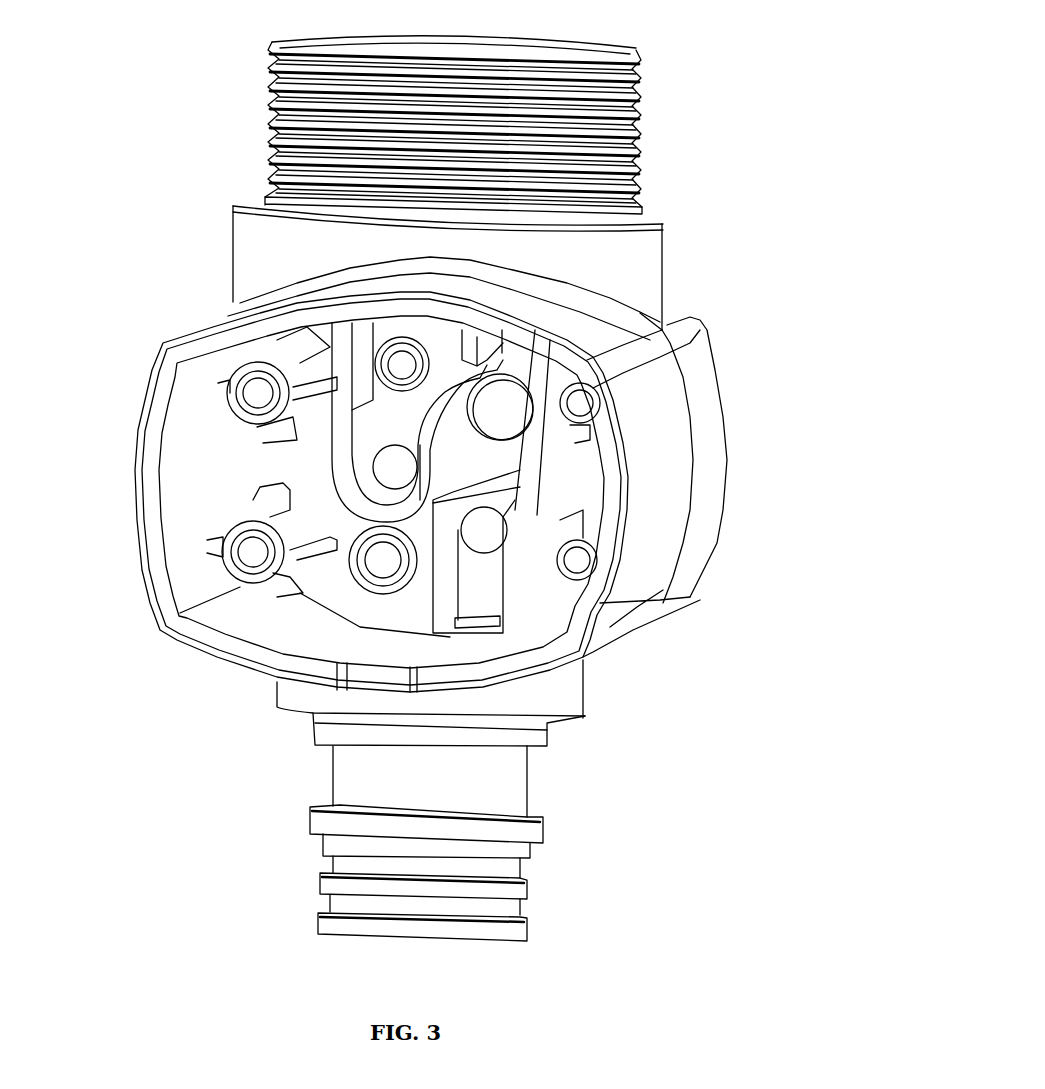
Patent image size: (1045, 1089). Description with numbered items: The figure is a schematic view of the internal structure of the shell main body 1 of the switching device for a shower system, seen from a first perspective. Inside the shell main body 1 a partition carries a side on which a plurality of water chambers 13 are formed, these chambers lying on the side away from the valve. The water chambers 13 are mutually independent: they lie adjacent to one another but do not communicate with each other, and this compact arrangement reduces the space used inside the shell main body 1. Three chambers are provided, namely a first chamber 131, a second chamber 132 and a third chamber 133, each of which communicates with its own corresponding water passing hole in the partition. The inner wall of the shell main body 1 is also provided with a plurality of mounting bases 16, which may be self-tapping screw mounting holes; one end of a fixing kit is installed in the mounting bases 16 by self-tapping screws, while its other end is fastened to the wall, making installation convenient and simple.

The shell main body 1 is at (214, 720).
The water chambers 13 is at (639, 435).
The first chamber 131 is at (407, 412).
The second chamber 132 is at (500, 453).
The third chamber 133 is at (480, 588).
The mounting bases 16 is at (232, 522).